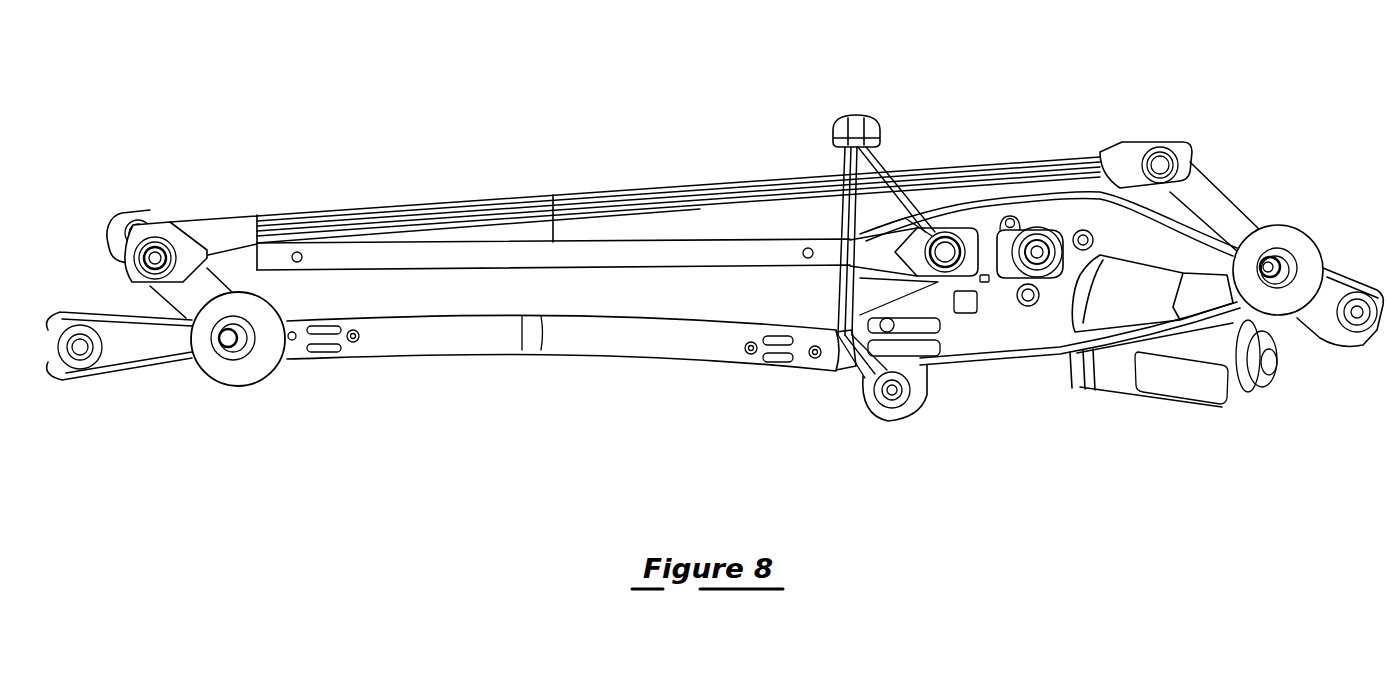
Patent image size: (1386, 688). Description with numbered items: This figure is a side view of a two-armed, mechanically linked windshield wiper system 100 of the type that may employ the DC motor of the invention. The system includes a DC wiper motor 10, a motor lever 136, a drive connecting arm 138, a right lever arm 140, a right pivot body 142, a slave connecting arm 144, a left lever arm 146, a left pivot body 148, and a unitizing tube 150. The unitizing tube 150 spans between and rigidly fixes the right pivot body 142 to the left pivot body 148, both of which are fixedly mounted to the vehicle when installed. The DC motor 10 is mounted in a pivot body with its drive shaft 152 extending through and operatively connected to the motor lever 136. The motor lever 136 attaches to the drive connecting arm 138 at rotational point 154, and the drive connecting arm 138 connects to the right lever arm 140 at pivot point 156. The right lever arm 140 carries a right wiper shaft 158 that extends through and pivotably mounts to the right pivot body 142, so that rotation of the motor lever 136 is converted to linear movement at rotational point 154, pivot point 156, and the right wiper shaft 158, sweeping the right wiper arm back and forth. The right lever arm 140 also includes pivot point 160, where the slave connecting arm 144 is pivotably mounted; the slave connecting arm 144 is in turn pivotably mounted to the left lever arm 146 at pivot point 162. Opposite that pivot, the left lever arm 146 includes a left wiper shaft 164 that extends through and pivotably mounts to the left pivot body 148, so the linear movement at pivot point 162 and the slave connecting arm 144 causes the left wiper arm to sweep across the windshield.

The DC wiper motor 10 is at (1100, 404).
The windshield wiper system 100 is at (386, 143).
The motor lever 136 is at (985, 222).
The drive connecting arm 138 is at (552, 195).
The right lever arm 140 is at (157, 296).
The right pivot body 142 is at (147, 383).
The slave connecting arm 144 is at (660, 188).
The left lever arm 146 is at (1220, 188).
The left pivot body 148 is at (958, 365).
The unitizing tube 150 is at (578, 358).
The drive shaft 152 is at (1050, 243).
The rotational point 154 is at (930, 240).
The pivot point 156 is at (157, 238).
The right wiper shaft 158 is at (232, 348).
The pivot point 160 is at (130, 221).
The pivot point 162 is at (1160, 163).
The left wiper shaft 164 is at (1280, 262).